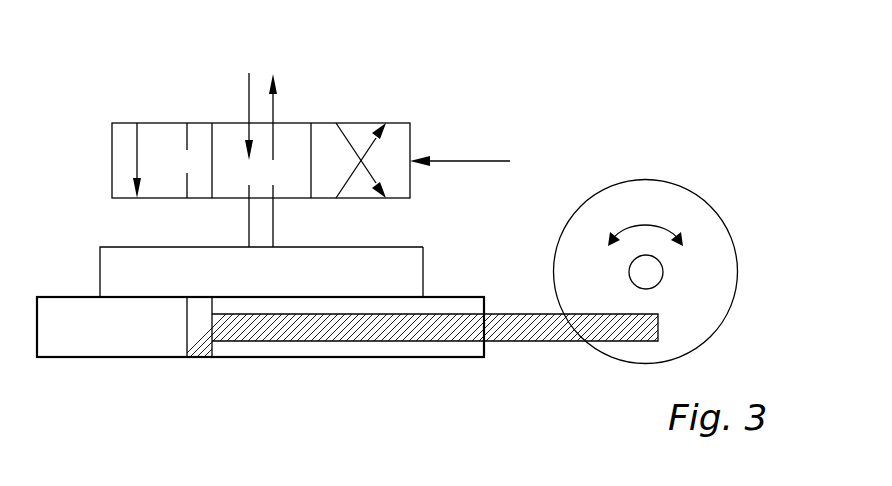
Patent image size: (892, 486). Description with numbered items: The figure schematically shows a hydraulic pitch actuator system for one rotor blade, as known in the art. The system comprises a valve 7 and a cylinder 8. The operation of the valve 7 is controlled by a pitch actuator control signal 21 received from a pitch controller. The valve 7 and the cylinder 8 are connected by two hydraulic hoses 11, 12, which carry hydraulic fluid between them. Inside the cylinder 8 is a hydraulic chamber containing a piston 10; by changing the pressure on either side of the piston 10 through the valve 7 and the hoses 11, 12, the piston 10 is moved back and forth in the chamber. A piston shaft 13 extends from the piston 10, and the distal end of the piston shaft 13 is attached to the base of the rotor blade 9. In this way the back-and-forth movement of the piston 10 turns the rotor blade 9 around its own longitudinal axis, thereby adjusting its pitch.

The valve 7 is at (123, 133).
The pitch actuator control signal 21 is at (475, 160).
The hydraulic hose 11 is at (107, 246).
The hydraulic hose 12 is at (423, 250).
The cylinder 8 is at (102, 357).
The piston 10 is at (199, 322).
The piston shaft 13 is at (617, 327).
The rotor blade 9 is at (670, 193).